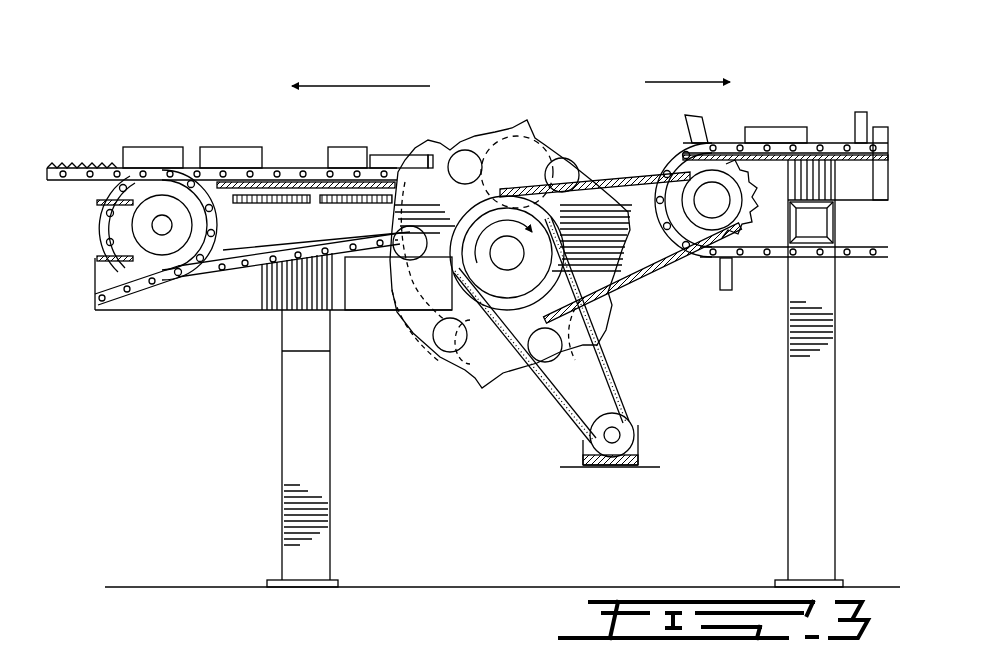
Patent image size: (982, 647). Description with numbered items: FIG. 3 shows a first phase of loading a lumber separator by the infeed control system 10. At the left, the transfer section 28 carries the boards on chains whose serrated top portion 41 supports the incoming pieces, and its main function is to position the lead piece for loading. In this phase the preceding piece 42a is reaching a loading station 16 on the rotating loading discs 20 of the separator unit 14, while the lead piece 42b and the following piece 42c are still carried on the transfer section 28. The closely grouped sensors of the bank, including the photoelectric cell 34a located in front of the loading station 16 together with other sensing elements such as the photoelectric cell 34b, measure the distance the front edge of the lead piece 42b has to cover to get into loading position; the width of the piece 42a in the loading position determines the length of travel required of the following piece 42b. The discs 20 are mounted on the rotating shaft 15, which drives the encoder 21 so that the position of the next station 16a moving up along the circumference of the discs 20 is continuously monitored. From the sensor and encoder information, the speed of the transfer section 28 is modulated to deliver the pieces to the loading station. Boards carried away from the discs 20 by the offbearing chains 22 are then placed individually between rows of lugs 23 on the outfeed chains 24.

The infeed control system 10 is at (128, 125).
The separator unit 14 is at (575, 82).
The rotating shaft 15 is at (506, 262).
The loading station 16 is at (412, 170).
The next loading station 16a is at (426, 345).
The loading discs 20 is at (608, 295).
The encoder 21 is at (643, 435).
The offbearing chains 22 is at (642, 140).
The lugs 23 is at (707, 127).
The outfeed chains 24 is at (832, 147).
The transfer section 28 is at (287, 170).
The photoelectric cell 34a is at (358, 195).
The photoelectric cell 34b is at (247, 195).
The serrated top portion 41 is at (73, 163).
The board 42a is at (390, 157).
The board 42b is at (355, 150).
The board 42c is at (302, 157).